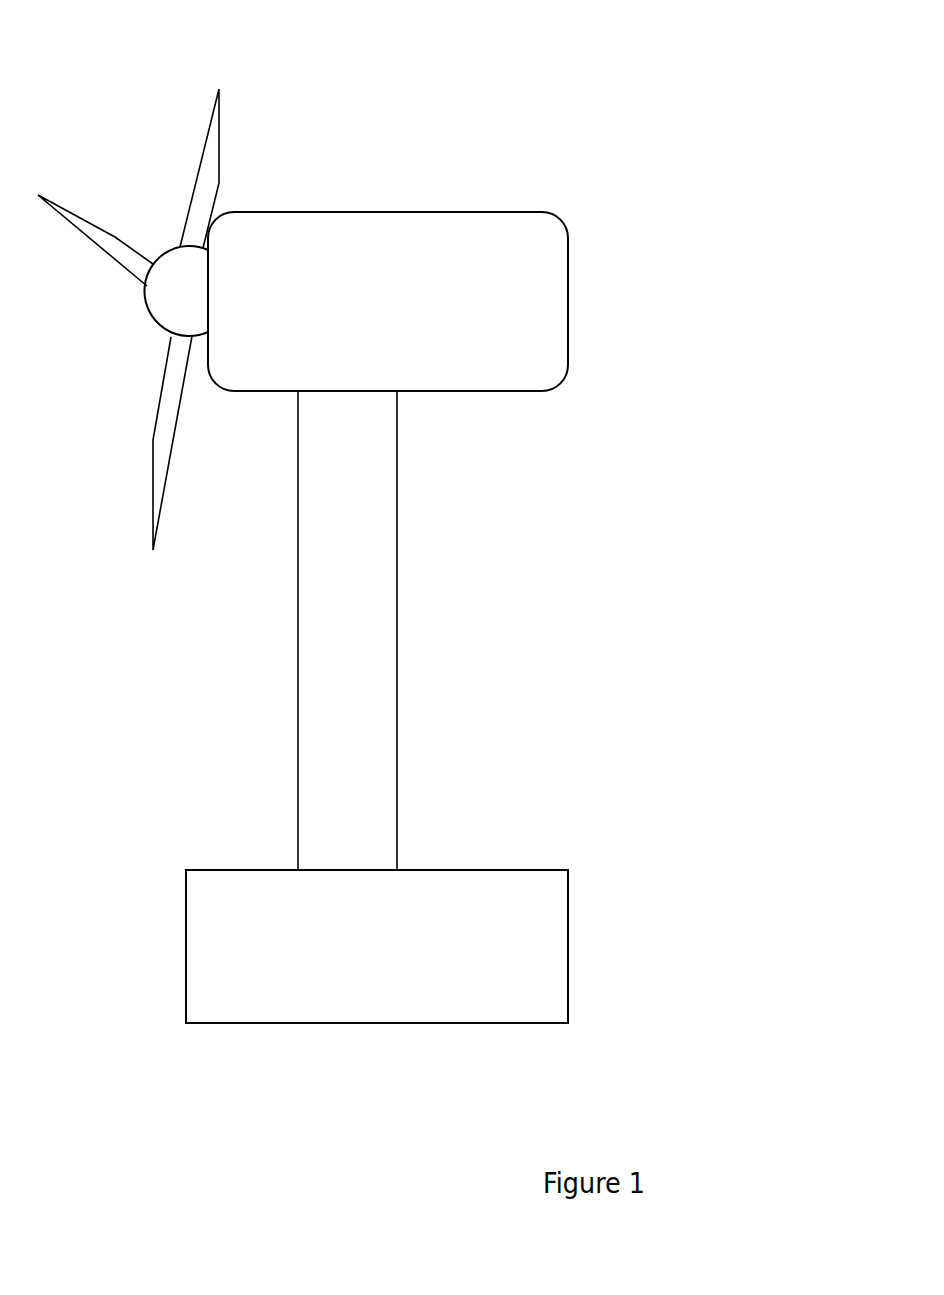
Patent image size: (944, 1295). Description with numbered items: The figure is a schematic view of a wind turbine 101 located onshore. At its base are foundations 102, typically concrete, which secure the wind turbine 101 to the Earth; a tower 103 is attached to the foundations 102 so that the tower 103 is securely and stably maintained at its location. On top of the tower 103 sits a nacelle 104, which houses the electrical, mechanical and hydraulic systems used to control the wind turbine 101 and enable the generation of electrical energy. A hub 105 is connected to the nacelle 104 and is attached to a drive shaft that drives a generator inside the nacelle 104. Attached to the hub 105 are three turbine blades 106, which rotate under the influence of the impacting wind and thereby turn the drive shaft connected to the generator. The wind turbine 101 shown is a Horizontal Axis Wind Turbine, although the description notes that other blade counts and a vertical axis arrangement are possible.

The wind turbine 101 is at (578, 52).
The foundations 102 is at (377, 946).
The tower 103 is at (347, 630).
The nacelle 104 is at (388, 301).
The hub 105 is at (141, 315).
The turbine blades 106 is at (188, 163).